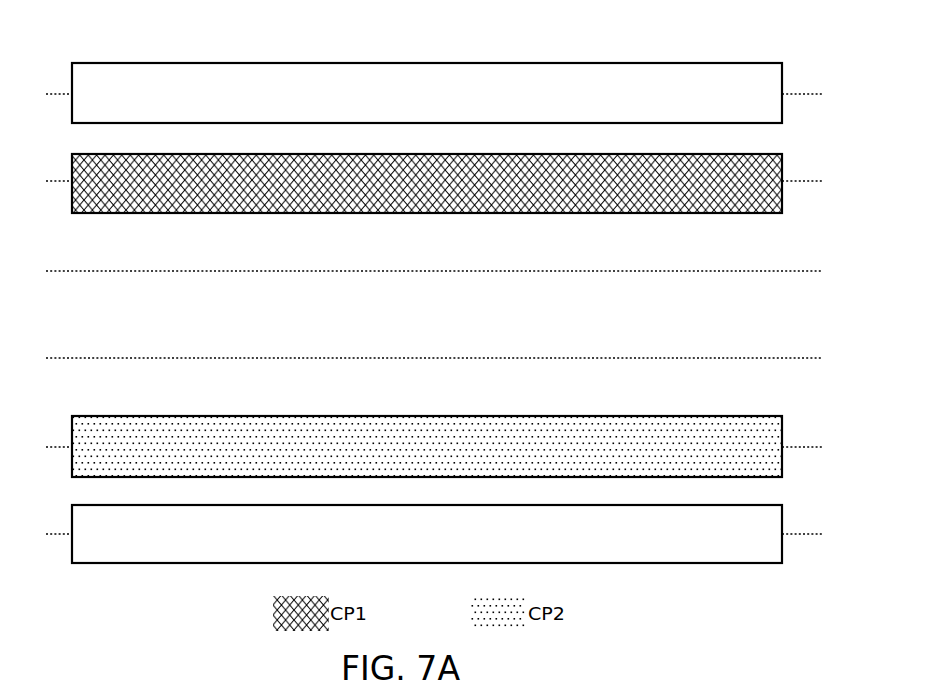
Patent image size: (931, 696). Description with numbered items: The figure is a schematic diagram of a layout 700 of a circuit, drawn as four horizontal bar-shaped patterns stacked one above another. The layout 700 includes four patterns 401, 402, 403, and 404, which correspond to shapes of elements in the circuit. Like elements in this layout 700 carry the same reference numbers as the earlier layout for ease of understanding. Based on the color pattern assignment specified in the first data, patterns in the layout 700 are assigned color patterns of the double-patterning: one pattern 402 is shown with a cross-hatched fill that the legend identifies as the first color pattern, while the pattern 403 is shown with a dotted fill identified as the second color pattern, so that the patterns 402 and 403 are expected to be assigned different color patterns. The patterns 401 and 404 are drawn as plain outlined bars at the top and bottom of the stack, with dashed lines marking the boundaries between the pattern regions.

The layout 700 is at (415, 28).
The pattern 401 is at (442, 103).
The pattern 402 is at (110, 213).
The pattern 403 is at (165, 416).
The pattern 404 is at (443, 543).